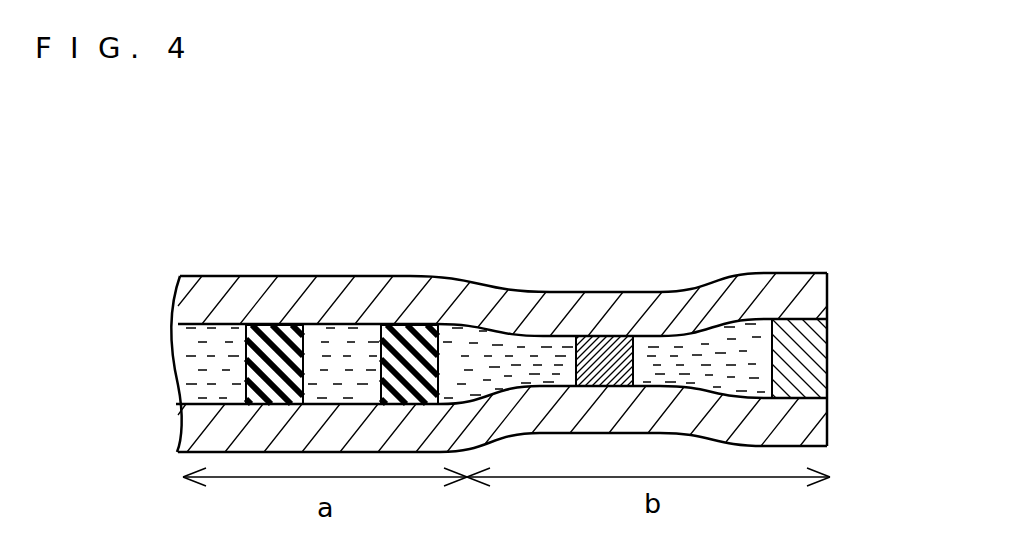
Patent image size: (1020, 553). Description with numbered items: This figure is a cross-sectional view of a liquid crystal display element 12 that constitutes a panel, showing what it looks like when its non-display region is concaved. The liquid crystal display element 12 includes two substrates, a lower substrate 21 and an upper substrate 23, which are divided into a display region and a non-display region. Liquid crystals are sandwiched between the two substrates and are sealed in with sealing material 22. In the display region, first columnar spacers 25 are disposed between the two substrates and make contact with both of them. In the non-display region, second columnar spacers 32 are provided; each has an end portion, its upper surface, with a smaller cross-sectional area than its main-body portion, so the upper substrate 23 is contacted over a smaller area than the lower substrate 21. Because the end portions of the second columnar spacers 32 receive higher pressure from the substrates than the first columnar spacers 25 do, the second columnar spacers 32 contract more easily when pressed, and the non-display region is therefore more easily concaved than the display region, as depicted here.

The liquid crystal display element 12 is at (800, 211).
The lower substrate 21 is at (827, 418).
The sealing material 22 is at (827, 357).
The upper substrate 23 is at (827, 293).
The first columnar spacers 25 is at (397, 325).
The second columnar spacers 32 is at (608, 336).